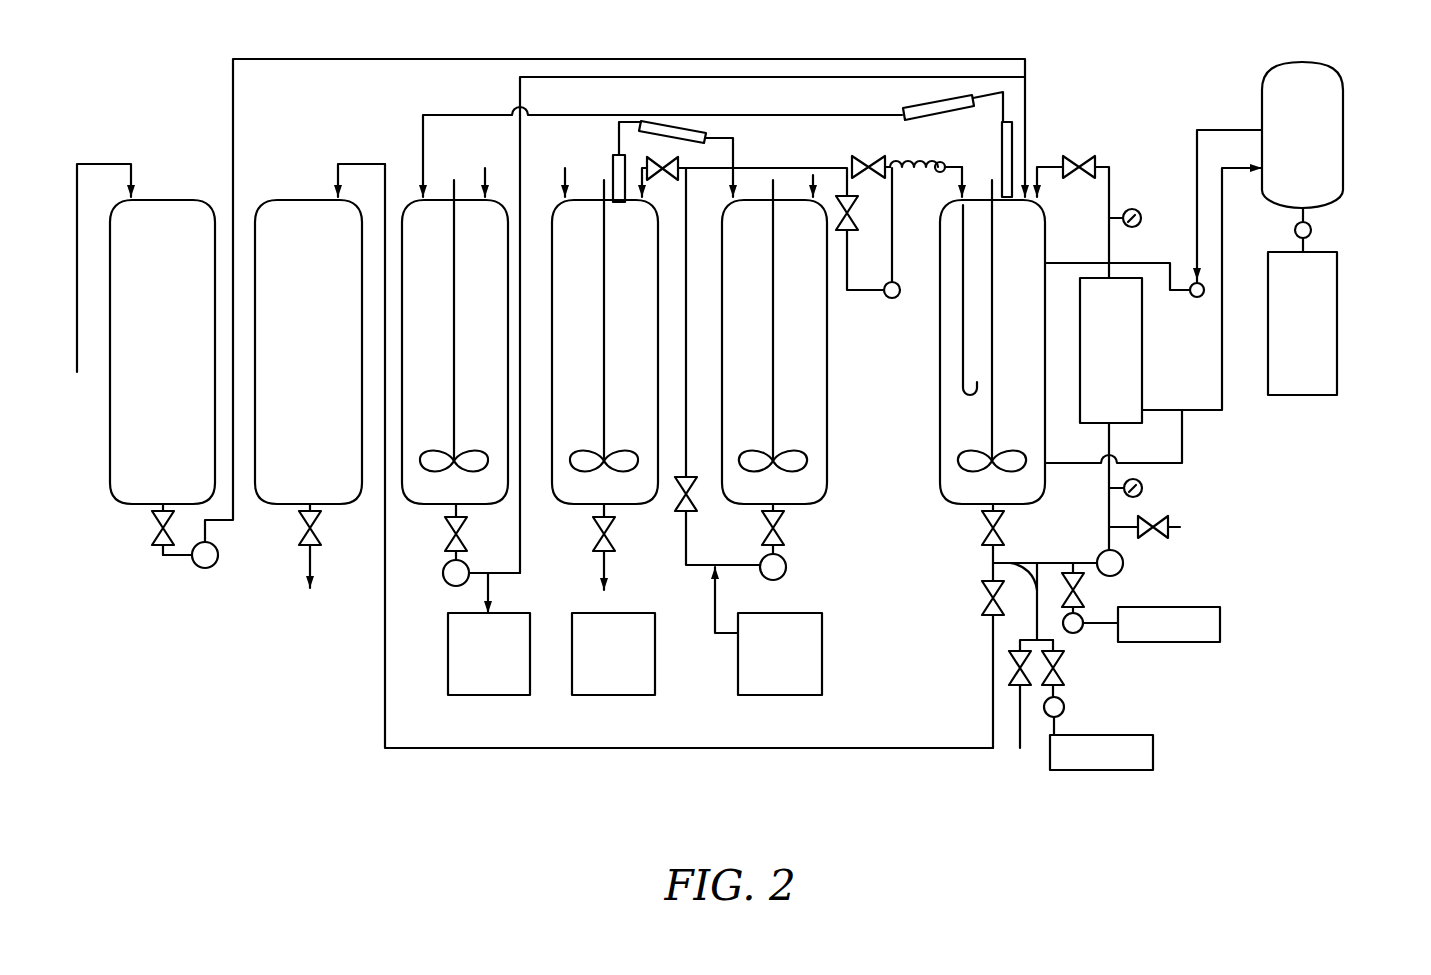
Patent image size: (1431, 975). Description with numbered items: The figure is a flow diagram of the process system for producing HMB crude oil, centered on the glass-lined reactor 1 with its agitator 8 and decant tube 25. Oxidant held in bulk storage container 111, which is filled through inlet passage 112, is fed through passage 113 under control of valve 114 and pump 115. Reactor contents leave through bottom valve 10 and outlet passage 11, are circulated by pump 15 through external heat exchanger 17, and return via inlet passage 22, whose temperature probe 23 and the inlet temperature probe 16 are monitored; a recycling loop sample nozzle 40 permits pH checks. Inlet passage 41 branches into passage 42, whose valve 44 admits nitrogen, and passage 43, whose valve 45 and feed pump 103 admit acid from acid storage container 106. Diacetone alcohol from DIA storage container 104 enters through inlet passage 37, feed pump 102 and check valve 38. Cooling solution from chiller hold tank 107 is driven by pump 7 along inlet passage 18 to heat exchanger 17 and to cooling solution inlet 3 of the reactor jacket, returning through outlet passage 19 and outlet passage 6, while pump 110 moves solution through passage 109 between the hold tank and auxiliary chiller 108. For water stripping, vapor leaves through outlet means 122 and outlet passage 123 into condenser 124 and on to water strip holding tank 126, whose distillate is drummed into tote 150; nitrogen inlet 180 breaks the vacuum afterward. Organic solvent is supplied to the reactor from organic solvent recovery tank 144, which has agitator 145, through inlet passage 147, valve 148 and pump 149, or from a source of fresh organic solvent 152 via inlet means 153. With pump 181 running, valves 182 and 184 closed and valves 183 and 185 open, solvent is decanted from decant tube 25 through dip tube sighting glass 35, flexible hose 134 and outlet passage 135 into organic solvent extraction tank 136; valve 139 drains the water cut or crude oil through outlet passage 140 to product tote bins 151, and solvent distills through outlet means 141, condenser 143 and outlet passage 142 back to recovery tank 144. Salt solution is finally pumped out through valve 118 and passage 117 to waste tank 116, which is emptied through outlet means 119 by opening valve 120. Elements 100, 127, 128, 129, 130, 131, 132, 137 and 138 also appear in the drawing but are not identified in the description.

The reactor 1 is at (942, 405).
The cooling solution inlet 3 is at (1150, 262).
The outlet passage 6 is at (1183, 445).
The pump 7 is at (1205, 288).
The agitator 8 is at (994, 337).
The bottom valve 10 is at (982, 525).
The outlet passage 11 is at (1052, 563).
The pump 15 is at (1123, 556).
The temperature probe 16 is at (1143, 488).
The heat exchanger 17 is at (1143, 352).
The inlet passage 18 is at (1195, 140).
The outlet passage 19 is at (1223, 370).
The inlet passage 22 is at (1110, 167).
The temperature probe 23 is at (1142, 215).
The decant tube 25 is at (963, 332).
The dip tube sighting glass 35 is at (940, 160).
The inlet passage 37 is at (1102, 627).
The check valve 38 is at (1091, 560).
The recycling loop sample nozzle 40 is at (1178, 525).
The inlet passage 41 is at (990, 558).
The passage 42 is at (1018, 748).
The passage 43 is at (1057, 688).
The valve 44 is at (1013, 687).
The valve 45 is at (1063, 658).
The line 100 is at (1075, 158).
The feed pump 102 is at (1083, 615).
The feed pump 103 is at (1065, 712).
The DIA storage container 104 is at (1221, 625).
The acid storage container 106 is at (1103, 771).
The chiller hold tank 107 is at (1345, 118).
The auxiliary chiller 108 is at (1338, 340).
The passage 109 is at (1312, 228).
The pump 110 is at (1313, 233).
The oxidant bulk storage container 111 is at (185, 200).
The inlet passage 112 is at (103, 164).
The passage 113 is at (393, 59).
The valve 114 is at (152, 520).
The pump 115 is at (205, 570).
The waste tank 116 is at (278, 200).
The passage 117 is at (928, 748).
The valve 118 is at (982, 604).
The outlet means 119 is at (318, 556).
The valve 120 is at (298, 528).
The outlet means 122 is at (1012, 160).
The outlet passage 123 is at (750, 115).
The condenser 124 is at (963, 95).
The water strip holding tank 126 is at (403, 358).
The stirrer 127 is at (456, 400).
The inlet 128 is at (485, 170).
The line 129 is at (660, 77).
The valve 130 is at (445, 523).
The pump 131 is at (445, 583).
The line 132 is at (490, 583).
The flexible hose 134 is at (910, 162).
The outlet passage 135 is at (821, 165).
The organic solvent extraction tank 136 is at (553, 345).
The stirrer 137 is at (606, 402).
The inlet 138 is at (563, 172).
The valve 139 is at (614, 532).
The outlet passage 140 is at (610, 558).
The outlet means 141 is at (612, 172).
The outlet passage 142 is at (617, 128).
The condenser 143 is at (697, 135).
The organic solvent recovery tank 144 is at (808, 352).
The agitator 145 is at (775, 405).
The inlet passage 147 is at (700, 352).
The valve 148 is at (785, 530).
The pump 149 is at (787, 575).
The tote 150 is at (490, 696).
The product tote bin 151 is at (615, 696).
The source of fresh organic solvent 152 is at (823, 648).
The inlet means 153 is at (710, 612).
The nitrogen inlet 180 is at (950, 183).
The pump 181 is at (890, 300).
The valve 182 is at (868, 156).
The valve 183 is at (856, 222).
The valve 184 is at (692, 487).
The valve 185 is at (658, 182).